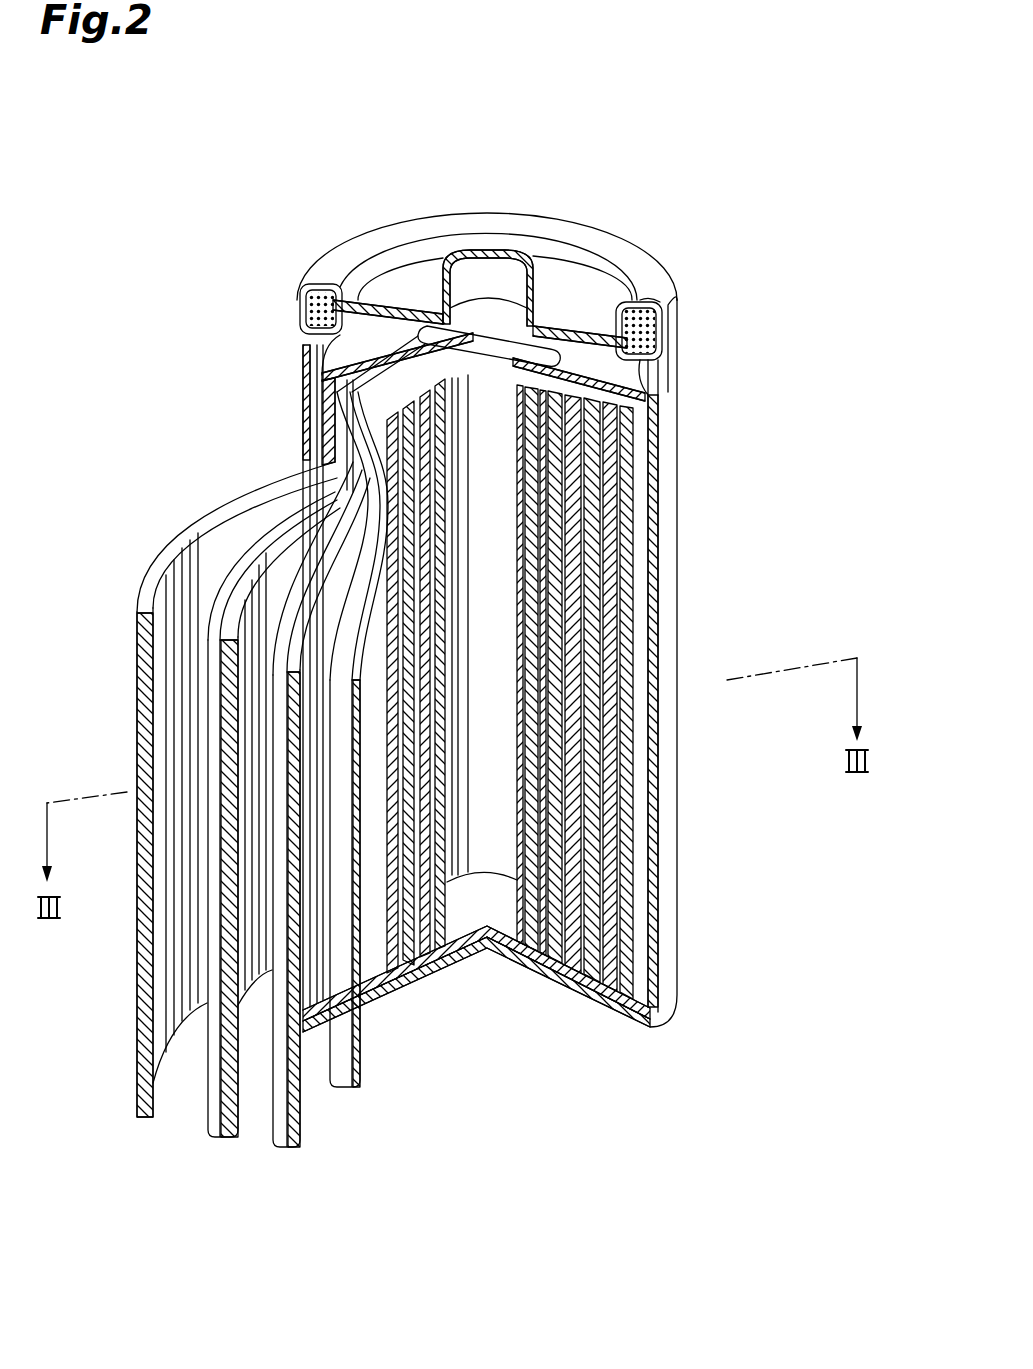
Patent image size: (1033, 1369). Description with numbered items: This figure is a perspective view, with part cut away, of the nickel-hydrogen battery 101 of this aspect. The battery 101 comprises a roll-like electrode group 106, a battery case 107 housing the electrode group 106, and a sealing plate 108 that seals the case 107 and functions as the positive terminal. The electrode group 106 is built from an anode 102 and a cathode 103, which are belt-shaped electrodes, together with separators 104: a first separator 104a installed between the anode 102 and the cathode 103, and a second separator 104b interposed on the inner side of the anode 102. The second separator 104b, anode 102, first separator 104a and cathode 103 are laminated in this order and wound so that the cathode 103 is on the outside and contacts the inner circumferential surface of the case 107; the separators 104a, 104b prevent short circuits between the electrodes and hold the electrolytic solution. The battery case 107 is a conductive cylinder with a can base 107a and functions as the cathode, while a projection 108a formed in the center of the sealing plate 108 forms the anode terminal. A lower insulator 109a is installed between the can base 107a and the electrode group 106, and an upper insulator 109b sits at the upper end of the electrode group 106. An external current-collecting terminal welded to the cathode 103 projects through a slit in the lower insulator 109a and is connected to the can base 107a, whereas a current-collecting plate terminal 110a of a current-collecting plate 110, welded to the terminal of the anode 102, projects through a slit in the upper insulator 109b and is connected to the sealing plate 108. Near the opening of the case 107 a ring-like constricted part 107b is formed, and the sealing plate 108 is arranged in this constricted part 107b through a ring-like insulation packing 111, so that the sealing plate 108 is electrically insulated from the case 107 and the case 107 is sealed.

The nickel-hydrogen battery 101 is at (200, 152).
The anode 102 is at (280, 1140).
The cathode 103 is at (147, 1117).
The separator 104 is at (377, 822).
The first separator 104a is at (222, 1140).
The second separator 104b is at (338, 1075).
The roll-like electrode group 106 is at (642, 648).
The battery case 107 is at (673, 478).
The can base 107a is at (593, 1003).
The constricted part 107b is at (660, 366).
The sealing plate 108 is at (570, 298).
The projection 108a is at (487, 253).
The lower insulator 109a is at (537, 958).
The upper insulator 109b is at (340, 358).
The current-collecting plate 110 is at (313, 388).
The current-collecting plate terminal 110a is at (640, 300).
The insulation packing 111 is at (316, 293).